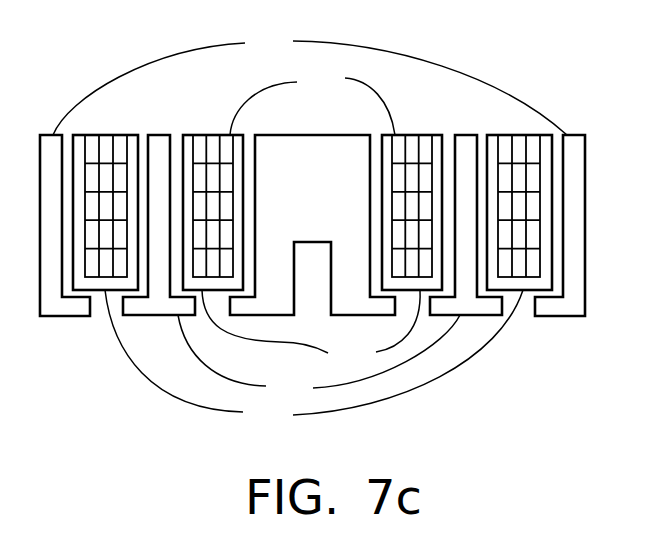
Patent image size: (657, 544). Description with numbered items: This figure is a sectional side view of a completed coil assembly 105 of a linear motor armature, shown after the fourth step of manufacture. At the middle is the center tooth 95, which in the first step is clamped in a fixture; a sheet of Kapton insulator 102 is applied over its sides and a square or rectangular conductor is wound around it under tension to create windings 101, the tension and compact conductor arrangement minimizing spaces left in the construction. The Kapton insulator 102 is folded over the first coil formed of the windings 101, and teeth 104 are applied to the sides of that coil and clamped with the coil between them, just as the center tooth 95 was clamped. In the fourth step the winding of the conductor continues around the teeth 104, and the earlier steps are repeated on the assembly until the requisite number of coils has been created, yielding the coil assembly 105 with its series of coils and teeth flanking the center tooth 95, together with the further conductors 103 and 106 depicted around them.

The center tooth 95 is at (283, 135).
The windings 101 is at (312, 102).
The Kapton insulator 102 is at (311, 328).
The lower outer winding conductor 103 is at (314, 358).
The teeth 104 is at (319, 358).
The coil assembly 105 is at (513, 77).
The upper outer winding conductor 106 is at (310, 83).